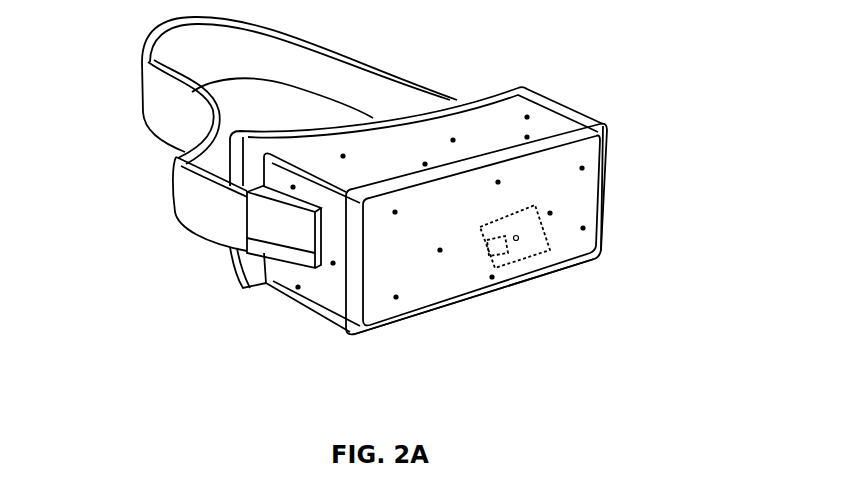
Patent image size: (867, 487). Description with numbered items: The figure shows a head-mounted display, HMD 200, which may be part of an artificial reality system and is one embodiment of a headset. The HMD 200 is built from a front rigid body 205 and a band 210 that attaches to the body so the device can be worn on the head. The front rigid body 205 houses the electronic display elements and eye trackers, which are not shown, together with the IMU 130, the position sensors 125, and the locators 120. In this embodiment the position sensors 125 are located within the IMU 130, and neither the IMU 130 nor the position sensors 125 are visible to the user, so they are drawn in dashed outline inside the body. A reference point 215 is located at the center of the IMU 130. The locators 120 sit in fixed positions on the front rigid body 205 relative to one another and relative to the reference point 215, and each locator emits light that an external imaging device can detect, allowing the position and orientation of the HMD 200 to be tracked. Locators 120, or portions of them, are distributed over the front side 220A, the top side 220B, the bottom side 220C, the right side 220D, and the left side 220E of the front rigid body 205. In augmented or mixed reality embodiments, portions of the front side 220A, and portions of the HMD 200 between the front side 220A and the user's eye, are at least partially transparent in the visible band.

The head-mounted display 200 is at (45, 23).
The band 210 is at (377, 63).
The front rigid body 205 is at (603, 126).
The front side 220A is at (385, 310).
The top side 220B is at (327, 157).
The bottom side 220C is at (290, 322).
The right side 220D is at (330, 287).
The left side 220E is at (582, 118).
The locators 120 is at (583, 228).
The position sensors 125 is at (498, 248).
The inertial measurement unit 130 is at (550, 245).
The reference point 215 is at (516, 242).